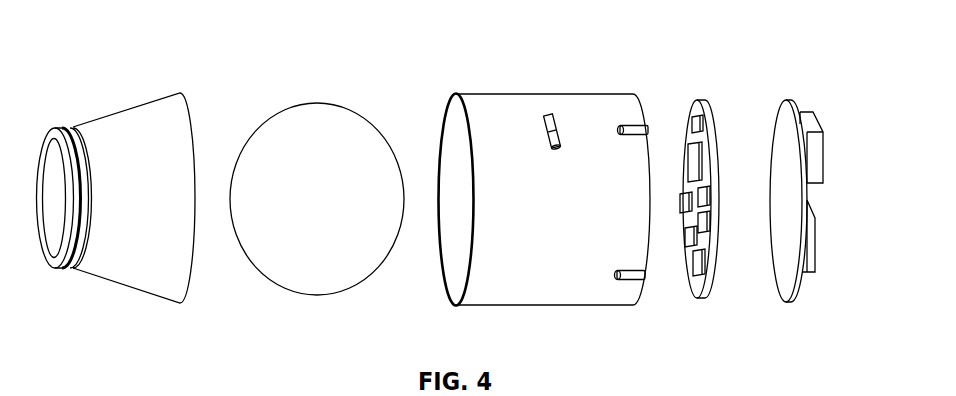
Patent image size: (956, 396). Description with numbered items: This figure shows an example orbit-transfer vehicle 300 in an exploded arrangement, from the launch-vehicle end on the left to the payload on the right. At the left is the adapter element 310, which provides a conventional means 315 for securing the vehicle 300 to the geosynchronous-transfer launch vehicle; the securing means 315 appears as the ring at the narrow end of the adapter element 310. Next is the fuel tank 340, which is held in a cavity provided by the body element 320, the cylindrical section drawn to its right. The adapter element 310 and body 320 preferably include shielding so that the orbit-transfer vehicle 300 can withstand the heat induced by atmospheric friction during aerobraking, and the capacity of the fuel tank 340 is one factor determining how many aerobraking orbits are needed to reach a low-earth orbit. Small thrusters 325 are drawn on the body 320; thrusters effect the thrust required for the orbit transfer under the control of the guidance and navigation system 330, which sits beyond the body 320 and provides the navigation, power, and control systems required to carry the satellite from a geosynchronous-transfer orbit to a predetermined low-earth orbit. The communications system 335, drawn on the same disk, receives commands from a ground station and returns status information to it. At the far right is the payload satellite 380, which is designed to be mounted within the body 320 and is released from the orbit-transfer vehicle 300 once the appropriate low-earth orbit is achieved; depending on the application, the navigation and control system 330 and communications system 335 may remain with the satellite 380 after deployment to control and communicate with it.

The orbit-transfer vehicle 300 is at (267, 88).
The adapter element 310 is at (116, 184).
The conventional means for securing 315 is at (50, 130).
The body element 320 is at (545, 187).
The thrusters 325 is at (620, 128).
The guidance and navigation system 330 is at (699, 133).
The communications system 335 is at (697, 258).
The fuel tank 340 is at (317, 199).
The satellite 380 is at (788, 123).